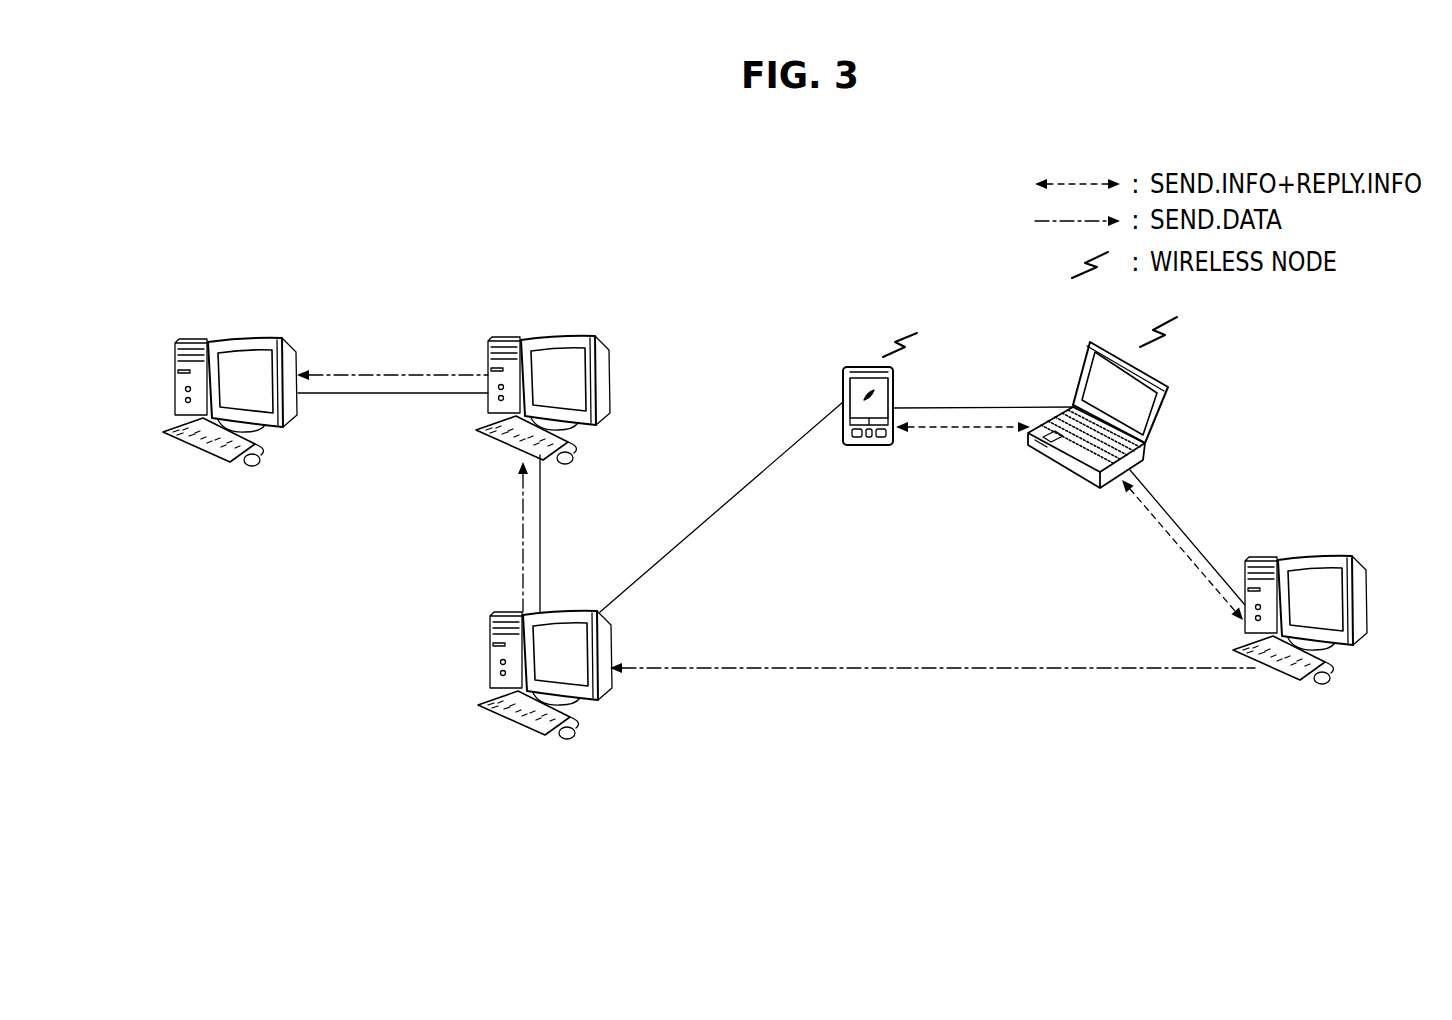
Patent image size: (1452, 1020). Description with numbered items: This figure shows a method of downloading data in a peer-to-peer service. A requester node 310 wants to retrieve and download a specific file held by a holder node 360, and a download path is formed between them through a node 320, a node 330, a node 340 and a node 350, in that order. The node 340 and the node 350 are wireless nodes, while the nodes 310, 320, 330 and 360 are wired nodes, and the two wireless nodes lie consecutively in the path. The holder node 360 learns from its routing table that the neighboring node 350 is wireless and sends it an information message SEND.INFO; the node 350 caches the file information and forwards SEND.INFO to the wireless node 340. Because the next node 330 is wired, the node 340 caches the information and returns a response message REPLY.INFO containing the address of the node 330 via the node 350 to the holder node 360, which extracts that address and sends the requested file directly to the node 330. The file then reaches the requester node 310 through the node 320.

The requester node 310 is at (246, 338).
The node 320 is at (563, 336).
The node 330 is at (570, 612).
The node 340 is at (843, 405).
The node 350 is at (1082, 375).
The holder node 360 is at (1322, 557).